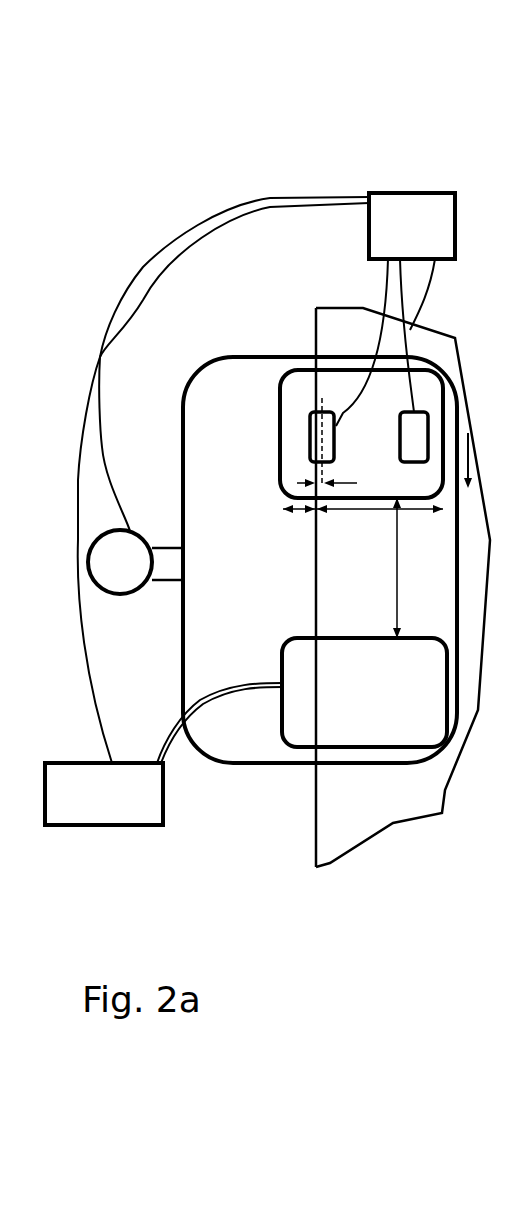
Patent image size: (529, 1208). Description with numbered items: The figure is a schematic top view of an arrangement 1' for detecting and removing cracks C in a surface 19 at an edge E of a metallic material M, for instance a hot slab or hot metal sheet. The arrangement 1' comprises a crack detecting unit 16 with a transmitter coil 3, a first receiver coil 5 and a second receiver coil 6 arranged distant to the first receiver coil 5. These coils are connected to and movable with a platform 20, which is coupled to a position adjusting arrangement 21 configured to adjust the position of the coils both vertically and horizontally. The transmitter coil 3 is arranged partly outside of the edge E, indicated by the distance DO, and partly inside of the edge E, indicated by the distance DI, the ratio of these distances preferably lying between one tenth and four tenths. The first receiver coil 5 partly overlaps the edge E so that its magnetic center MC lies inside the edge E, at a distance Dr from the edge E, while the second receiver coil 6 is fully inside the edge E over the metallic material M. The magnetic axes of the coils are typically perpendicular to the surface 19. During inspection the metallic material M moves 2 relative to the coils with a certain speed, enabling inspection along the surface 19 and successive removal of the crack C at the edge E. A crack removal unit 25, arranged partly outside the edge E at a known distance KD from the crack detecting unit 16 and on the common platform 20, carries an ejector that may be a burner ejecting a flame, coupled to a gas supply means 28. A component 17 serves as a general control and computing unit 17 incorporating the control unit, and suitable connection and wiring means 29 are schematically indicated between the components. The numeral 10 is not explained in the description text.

The arrangement 1' is at (301, 73).
The movement 2 is at (473, 468).
The transmitter coil 3 is at (445, 467).
The first receiver coil 5 is at (256, 397).
The second receiver coil 6 is at (457, 380).
The motor vehicle 10 is at (482, 375).
The crack detecting unit 16 is at (232, 437).
The general control and computing unit 17 is at (388, 228).
The surface 19 is at (478, 530).
The platform 20 is at (285, 408).
The position adjusting arrangement 21 is at (120, 594).
The crack removal unit 25 is at (297, 722).
The gas supply means 28 is at (140, 797).
The connection and wiring means 29 is at (197, 230).
The edge E is at (316, 336).
The crack C is at (316, 396).
The metallic material M is at (412, 795).
The magnetic center MC is at (316, 440).
The distance Dr is at (338, 471).
The distance DO is at (305, 512).
The distance DI is at (375, 512).
The known distance KD is at (378, 568).